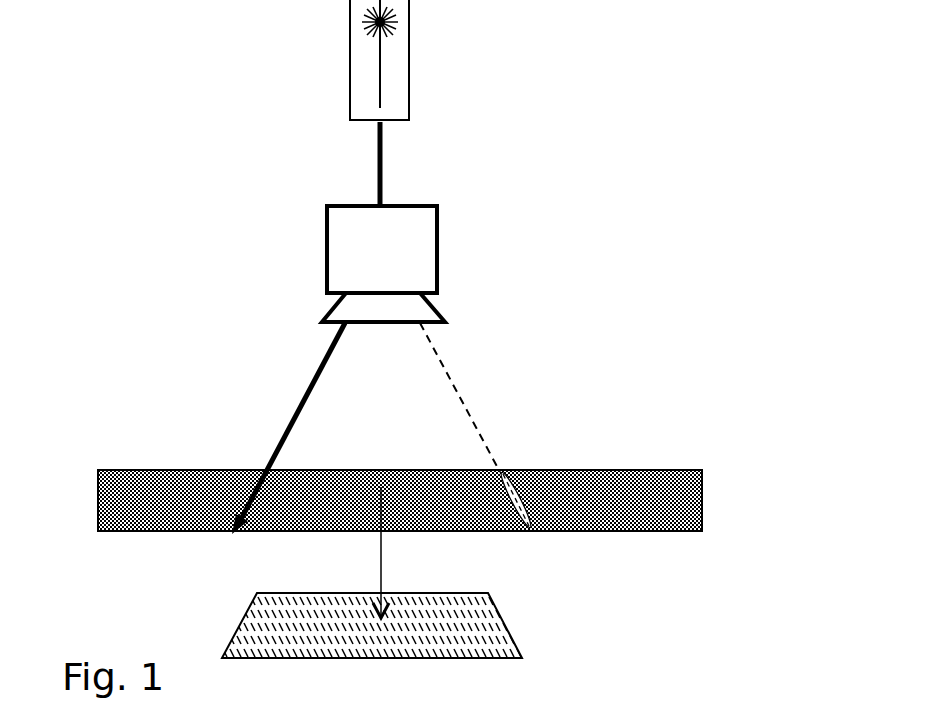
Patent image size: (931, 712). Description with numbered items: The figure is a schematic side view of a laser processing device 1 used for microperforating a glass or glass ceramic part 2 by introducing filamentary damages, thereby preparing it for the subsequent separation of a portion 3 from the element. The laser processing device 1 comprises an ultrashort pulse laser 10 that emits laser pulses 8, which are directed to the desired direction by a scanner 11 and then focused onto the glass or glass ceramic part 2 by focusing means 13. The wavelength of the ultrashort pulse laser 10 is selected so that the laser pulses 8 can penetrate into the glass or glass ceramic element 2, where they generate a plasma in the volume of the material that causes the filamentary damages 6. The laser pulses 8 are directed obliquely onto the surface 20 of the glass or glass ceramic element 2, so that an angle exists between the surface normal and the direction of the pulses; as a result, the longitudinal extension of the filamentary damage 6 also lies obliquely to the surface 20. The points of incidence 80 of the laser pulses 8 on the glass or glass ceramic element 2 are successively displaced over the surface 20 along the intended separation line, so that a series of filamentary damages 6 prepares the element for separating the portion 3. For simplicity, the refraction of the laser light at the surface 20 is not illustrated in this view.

The laser processing device 1 is at (280, 101).
The ultrashort pulse laser 10 is at (410, 82).
The scanner 11 is at (438, 233).
The focusing means 13 is at (445, 312).
The laser pulses 8 is at (305, 388).
The glass or glass ceramic part 2 is at (677, 488).
The surface 20 is at (143, 470).
The points of incidence 80 is at (255, 470).
The filamentary damages 6 is at (526, 478).
The portion 3 is at (483, 628).